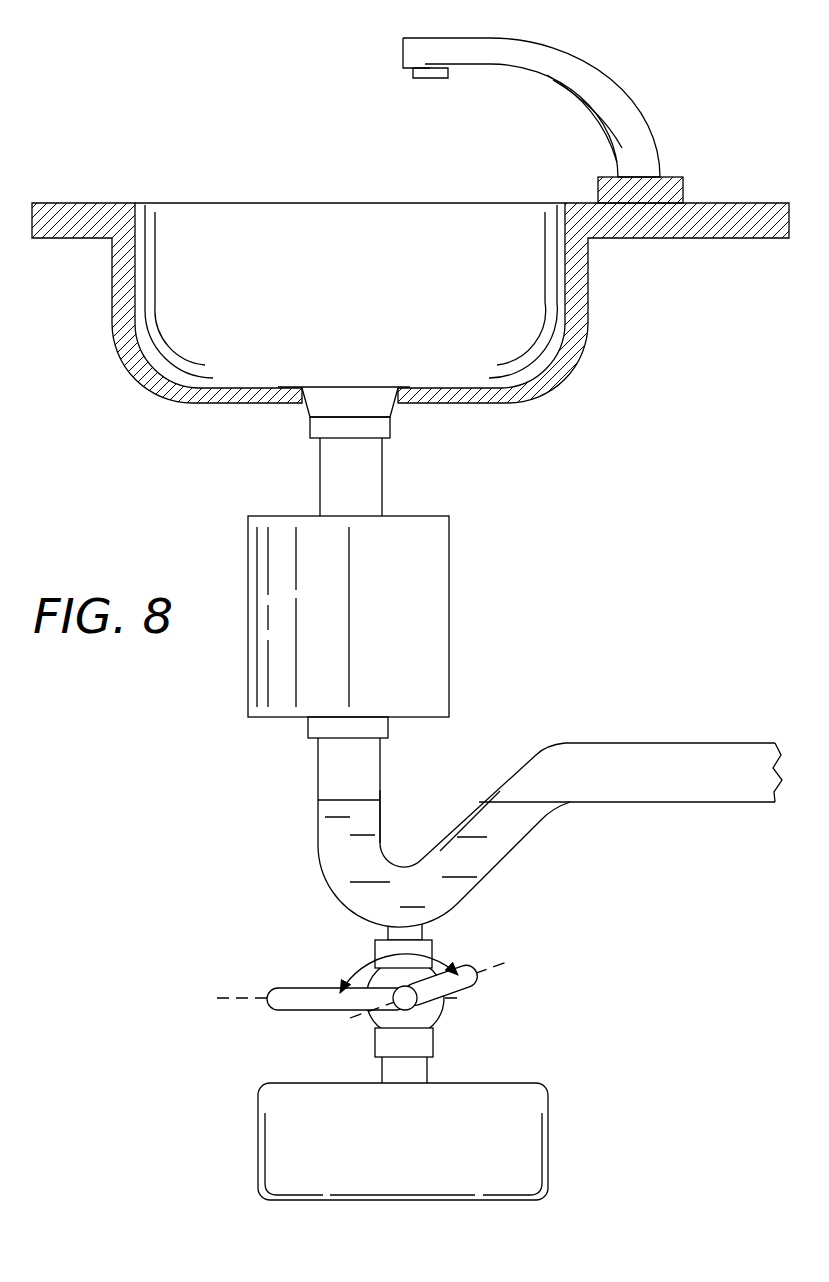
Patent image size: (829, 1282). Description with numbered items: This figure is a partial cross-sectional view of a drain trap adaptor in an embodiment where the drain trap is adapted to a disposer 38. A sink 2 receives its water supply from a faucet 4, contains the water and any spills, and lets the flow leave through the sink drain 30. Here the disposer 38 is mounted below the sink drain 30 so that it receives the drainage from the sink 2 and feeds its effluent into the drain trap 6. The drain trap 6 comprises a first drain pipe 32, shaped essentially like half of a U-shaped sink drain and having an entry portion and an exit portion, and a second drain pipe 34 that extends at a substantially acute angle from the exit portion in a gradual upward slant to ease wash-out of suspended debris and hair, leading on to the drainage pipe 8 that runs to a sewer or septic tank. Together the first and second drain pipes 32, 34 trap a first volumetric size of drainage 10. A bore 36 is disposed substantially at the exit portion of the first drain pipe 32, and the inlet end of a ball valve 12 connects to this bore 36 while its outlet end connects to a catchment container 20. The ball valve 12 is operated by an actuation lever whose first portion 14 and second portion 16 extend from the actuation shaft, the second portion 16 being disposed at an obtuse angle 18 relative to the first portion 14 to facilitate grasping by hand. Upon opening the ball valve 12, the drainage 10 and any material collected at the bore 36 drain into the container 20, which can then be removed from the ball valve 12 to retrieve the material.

The sink 2 is at (110, 298).
The faucet 4 is at (403, 50).
The drain trap 6 is at (390, 768).
The drainage pipe leading to sewer or septic tank 8 is at (667, 743).
The drainage 10 is at (473, 862).
The ball valve 12 is at (367, 1020).
The first portion of lever 14 is at (288, 988).
The second portion of lever 16 is at (480, 967).
The angle between first and second portions of lever 18 is at (443, 967).
The catchment container or bottle 20 is at (527, 1083).
The sink drain 30 is at (353, 387).
The first drain pipe 32 is at (382, 842).
The second drain pipe 34 is at (466, 816).
The bore 36 is at (387, 932).
The disposer 38 is at (450, 568).